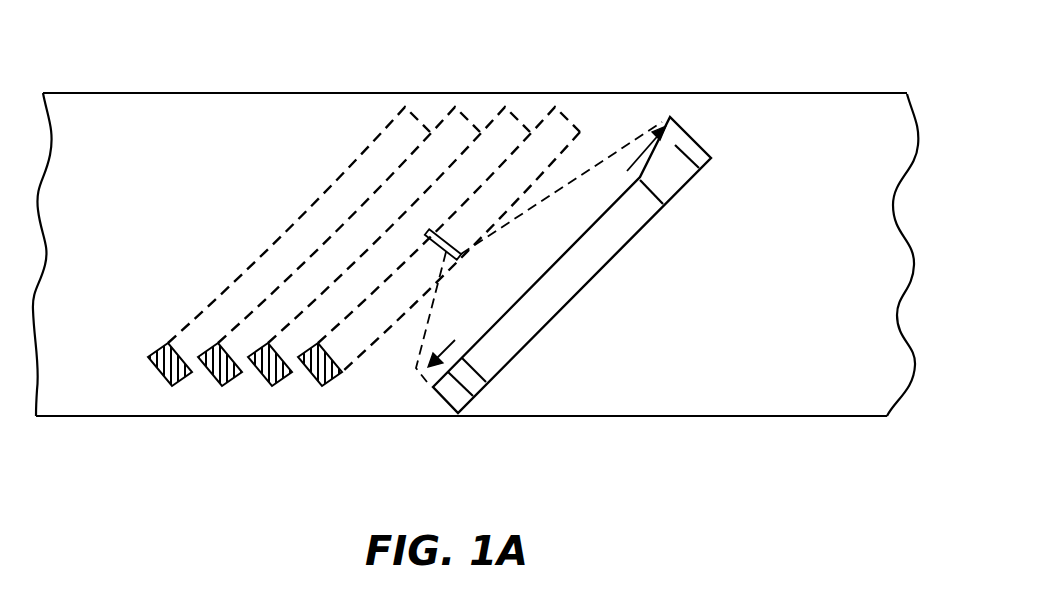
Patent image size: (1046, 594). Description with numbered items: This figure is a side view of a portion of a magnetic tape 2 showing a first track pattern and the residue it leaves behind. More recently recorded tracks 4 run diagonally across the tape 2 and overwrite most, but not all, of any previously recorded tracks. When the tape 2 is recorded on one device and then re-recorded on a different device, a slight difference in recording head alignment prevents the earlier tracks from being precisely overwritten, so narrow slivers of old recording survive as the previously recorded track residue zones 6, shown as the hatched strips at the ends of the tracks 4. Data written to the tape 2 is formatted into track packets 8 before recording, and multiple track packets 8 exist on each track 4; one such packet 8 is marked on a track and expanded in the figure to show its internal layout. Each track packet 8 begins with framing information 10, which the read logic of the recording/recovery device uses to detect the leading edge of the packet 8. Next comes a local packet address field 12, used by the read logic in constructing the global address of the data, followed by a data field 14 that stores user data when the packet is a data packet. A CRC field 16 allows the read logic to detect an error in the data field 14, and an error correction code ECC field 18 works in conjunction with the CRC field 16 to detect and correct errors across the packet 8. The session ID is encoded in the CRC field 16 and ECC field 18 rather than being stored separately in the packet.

The magnetic tape 2 is at (155, 93).
The recorded tracks 4 is at (400, 130).
The previously recorded track residue zone 6 is at (150, 360).
The track packet 8 is at (686, 130).
The framing information 10 is at (466, 400).
The local packet address field 12 is at (482, 386).
The data field 14 is at (567, 287).
The CRC field 16 is at (665, 188).
The ECC field 18 is at (703, 160).